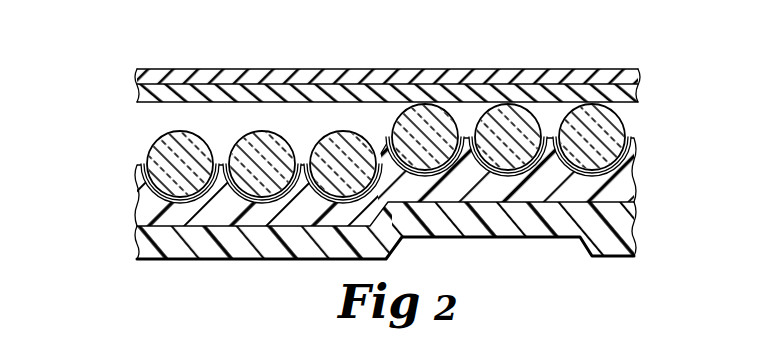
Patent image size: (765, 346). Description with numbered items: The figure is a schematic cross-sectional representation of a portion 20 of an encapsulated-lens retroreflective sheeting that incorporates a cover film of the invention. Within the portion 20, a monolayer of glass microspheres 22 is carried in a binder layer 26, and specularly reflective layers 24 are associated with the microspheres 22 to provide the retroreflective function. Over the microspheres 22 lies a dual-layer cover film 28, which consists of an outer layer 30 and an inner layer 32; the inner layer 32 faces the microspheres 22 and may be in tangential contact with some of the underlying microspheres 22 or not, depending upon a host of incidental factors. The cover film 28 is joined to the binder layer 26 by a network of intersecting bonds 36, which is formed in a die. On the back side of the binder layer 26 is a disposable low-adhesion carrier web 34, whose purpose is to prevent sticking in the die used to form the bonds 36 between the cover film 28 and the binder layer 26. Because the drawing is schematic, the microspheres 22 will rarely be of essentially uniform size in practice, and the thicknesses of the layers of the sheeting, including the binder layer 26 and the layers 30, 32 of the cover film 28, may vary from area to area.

The portion of retroreflective sheeting 20 is at (365, 202).
The glass microspheres 22 is at (261, 143).
The specularly reflective layers 24 is at (326, 198).
The binder layer 26 is at (622, 182).
The dual-layer cover film 28 is at (388, 66).
The outer layer 30 is at (193, 75).
The inner layer 32 is at (625, 95).
The low-adhesion carrier web 34 is at (175, 250).
The network of intersecting bonds 36 is at (402, 60).